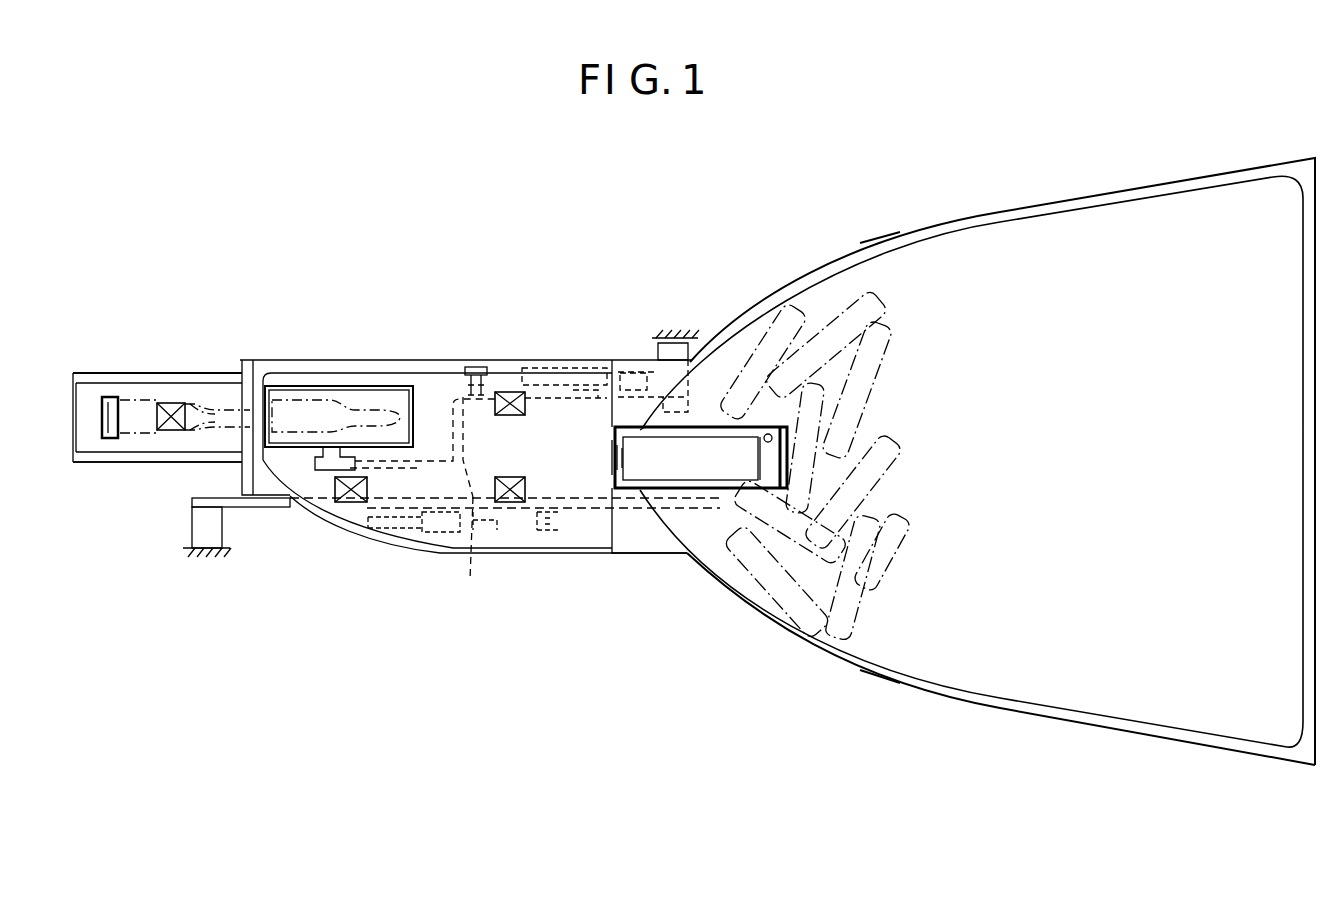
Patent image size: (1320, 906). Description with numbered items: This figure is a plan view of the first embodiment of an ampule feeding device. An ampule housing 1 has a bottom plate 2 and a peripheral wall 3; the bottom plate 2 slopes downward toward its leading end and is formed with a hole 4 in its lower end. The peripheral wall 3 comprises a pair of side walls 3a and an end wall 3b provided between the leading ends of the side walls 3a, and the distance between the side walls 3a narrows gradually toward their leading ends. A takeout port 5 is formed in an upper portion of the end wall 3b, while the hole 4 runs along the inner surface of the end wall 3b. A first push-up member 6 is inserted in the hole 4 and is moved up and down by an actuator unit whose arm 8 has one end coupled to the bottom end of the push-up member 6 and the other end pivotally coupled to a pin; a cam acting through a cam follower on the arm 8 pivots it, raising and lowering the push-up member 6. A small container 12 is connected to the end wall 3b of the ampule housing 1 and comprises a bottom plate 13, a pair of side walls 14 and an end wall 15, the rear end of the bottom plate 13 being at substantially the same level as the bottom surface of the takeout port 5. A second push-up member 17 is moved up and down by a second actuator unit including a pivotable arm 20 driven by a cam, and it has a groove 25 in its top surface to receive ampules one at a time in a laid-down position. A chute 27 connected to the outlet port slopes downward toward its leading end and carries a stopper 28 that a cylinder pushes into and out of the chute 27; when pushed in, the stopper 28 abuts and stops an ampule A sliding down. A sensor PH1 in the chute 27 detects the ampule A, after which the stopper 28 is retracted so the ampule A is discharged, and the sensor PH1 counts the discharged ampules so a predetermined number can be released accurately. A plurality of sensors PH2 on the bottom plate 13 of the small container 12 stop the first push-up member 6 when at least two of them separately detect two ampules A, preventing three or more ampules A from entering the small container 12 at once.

The ampule housing 1 is at (893, 233).
The bottom plate 2 is at (1086, 450).
The peripheral wall 3 is at (1025, 210).
The side walls 3a is at (952, 220).
The end wall 3b is at (648, 540).
The hole 4 is at (772, 428).
The takeout port 5 is at (610, 480).
The first push-up member 6 is at (660, 442).
The arm 8 is at (272, 507).
The small container 12 is at (290, 360).
The bottom plate 13 is at (433, 390).
The side walls 14 is at (492, 360).
The end wall 15 is at (247, 390).
The second push-up member 17 is at (370, 386).
The arm 20 is at (470, 580).
The groove 25 is at (340, 400).
The chute 27 is at (104, 465).
The stopper 28 is at (101, 412).
The sensor PH1 is at (170, 406).
The sensors PH2 is at (516, 476).
The ampule A is at (885, 320).